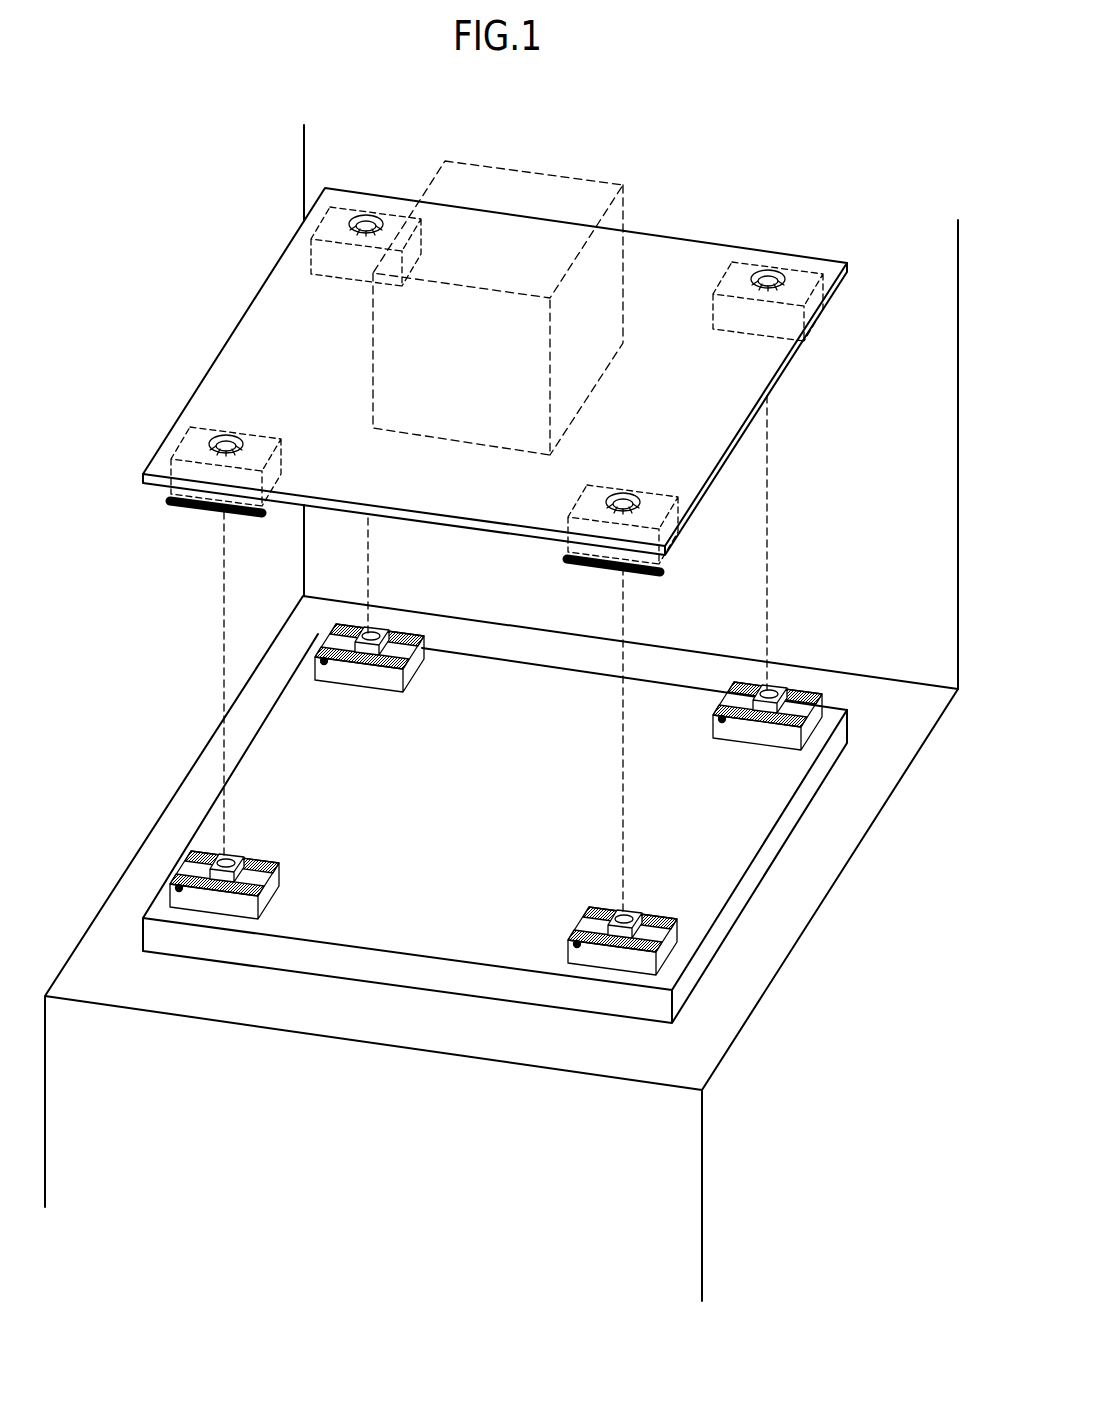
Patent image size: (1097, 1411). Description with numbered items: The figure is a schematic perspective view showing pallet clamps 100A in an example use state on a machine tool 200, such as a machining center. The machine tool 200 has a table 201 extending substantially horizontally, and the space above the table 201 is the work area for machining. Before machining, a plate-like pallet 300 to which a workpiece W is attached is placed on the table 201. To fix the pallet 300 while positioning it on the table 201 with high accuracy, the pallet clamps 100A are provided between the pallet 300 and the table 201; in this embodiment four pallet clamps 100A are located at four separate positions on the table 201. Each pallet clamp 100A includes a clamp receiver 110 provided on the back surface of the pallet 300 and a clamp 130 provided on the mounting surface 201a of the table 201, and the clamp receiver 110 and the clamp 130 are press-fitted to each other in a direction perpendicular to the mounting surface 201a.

The workpiece W is at (528, 187).
The pallet clamp 100A is at (513, 742).
The clamp receiver 110 is at (340, 212).
The clamp 130 is at (352, 677).
The machine tool 200 is at (155, 853).
The table 201 is at (391, 970).
The mounting surface 201a is at (715, 872).
The pallet 300 is at (678, 262).